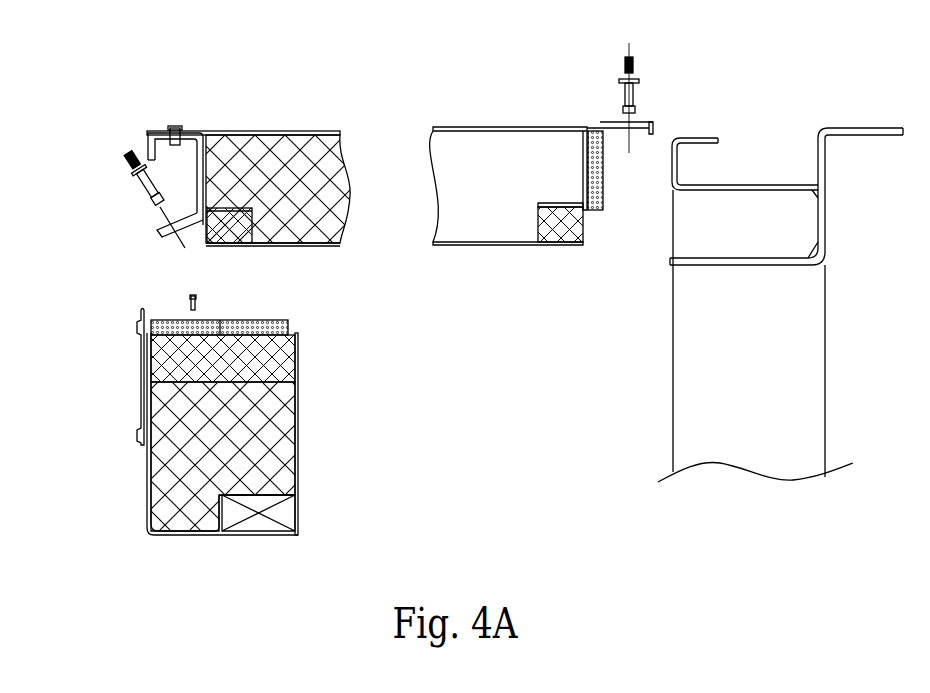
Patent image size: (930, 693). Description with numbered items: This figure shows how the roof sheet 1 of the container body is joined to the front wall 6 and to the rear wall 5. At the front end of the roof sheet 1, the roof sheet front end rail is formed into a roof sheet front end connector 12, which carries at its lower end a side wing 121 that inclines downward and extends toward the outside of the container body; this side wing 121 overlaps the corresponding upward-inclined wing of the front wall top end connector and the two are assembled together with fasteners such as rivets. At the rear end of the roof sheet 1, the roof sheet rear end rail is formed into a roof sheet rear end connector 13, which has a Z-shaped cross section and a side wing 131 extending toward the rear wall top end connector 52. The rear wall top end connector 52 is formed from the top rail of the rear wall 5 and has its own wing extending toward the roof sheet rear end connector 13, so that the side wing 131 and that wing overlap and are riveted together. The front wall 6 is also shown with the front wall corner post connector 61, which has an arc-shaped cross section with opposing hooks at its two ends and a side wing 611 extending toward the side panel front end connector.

The roof sheet 1 is at (320, 222).
The roof sheet front end connector 12 is at (198, 163).
The side wing 121 is at (158, 228).
The roof sheet rear end connector 13 is at (583, 163).
The side wing 131 is at (640, 137).
The rear wall 5 is at (812, 266).
The rear wall top end connector 52 is at (733, 183).
The front wall 6 is at (288, 473).
The front wall corner post connector 61 is at (142, 373).
The side wing 611 is at (147, 322).